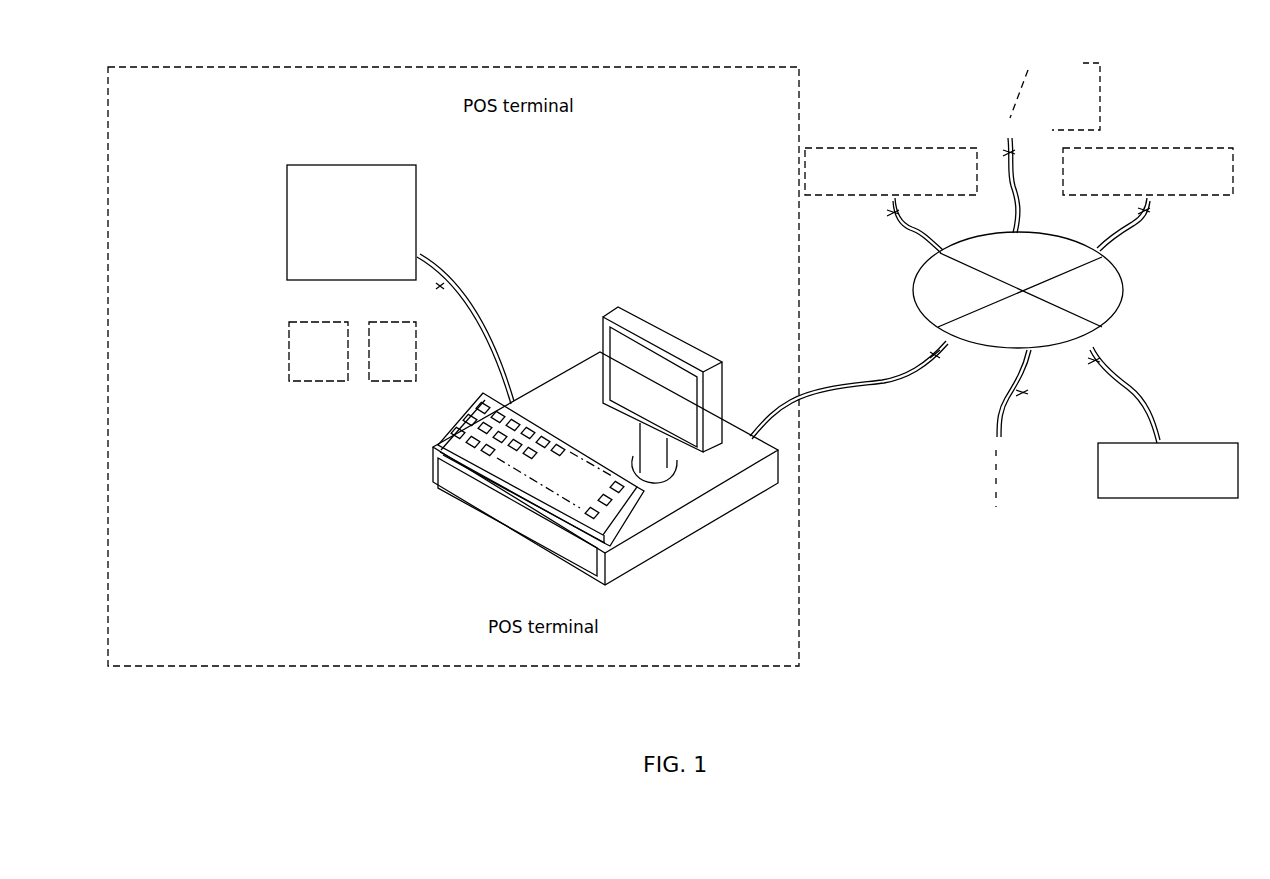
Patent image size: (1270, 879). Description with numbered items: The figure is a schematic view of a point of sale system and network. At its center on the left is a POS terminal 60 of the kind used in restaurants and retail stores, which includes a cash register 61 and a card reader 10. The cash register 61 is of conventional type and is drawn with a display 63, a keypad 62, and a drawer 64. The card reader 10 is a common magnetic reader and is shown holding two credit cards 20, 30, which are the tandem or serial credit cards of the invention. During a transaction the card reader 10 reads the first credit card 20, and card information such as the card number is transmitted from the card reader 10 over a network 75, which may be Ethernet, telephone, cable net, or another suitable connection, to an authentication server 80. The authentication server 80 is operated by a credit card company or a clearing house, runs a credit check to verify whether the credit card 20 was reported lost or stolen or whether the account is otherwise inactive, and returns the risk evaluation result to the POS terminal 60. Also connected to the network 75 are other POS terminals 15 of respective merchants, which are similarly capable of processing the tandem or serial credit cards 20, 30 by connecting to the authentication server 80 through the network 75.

The card reader 10 is at (396, 152).
The first credit card 20 is at (318, 351).
The second credit card 30 is at (392, 351).
The other POS terminals 15 is at (862, 146).
The POS terminal 60 is at (651, 279).
The cash register 61 is at (740, 493).
The keypad 62 is at (545, 470).
The display 63 is at (679, 380).
The drawer 64 is at (463, 480).
The network 75 is at (915, 310).
The authentication server 80 is at (1167, 500).